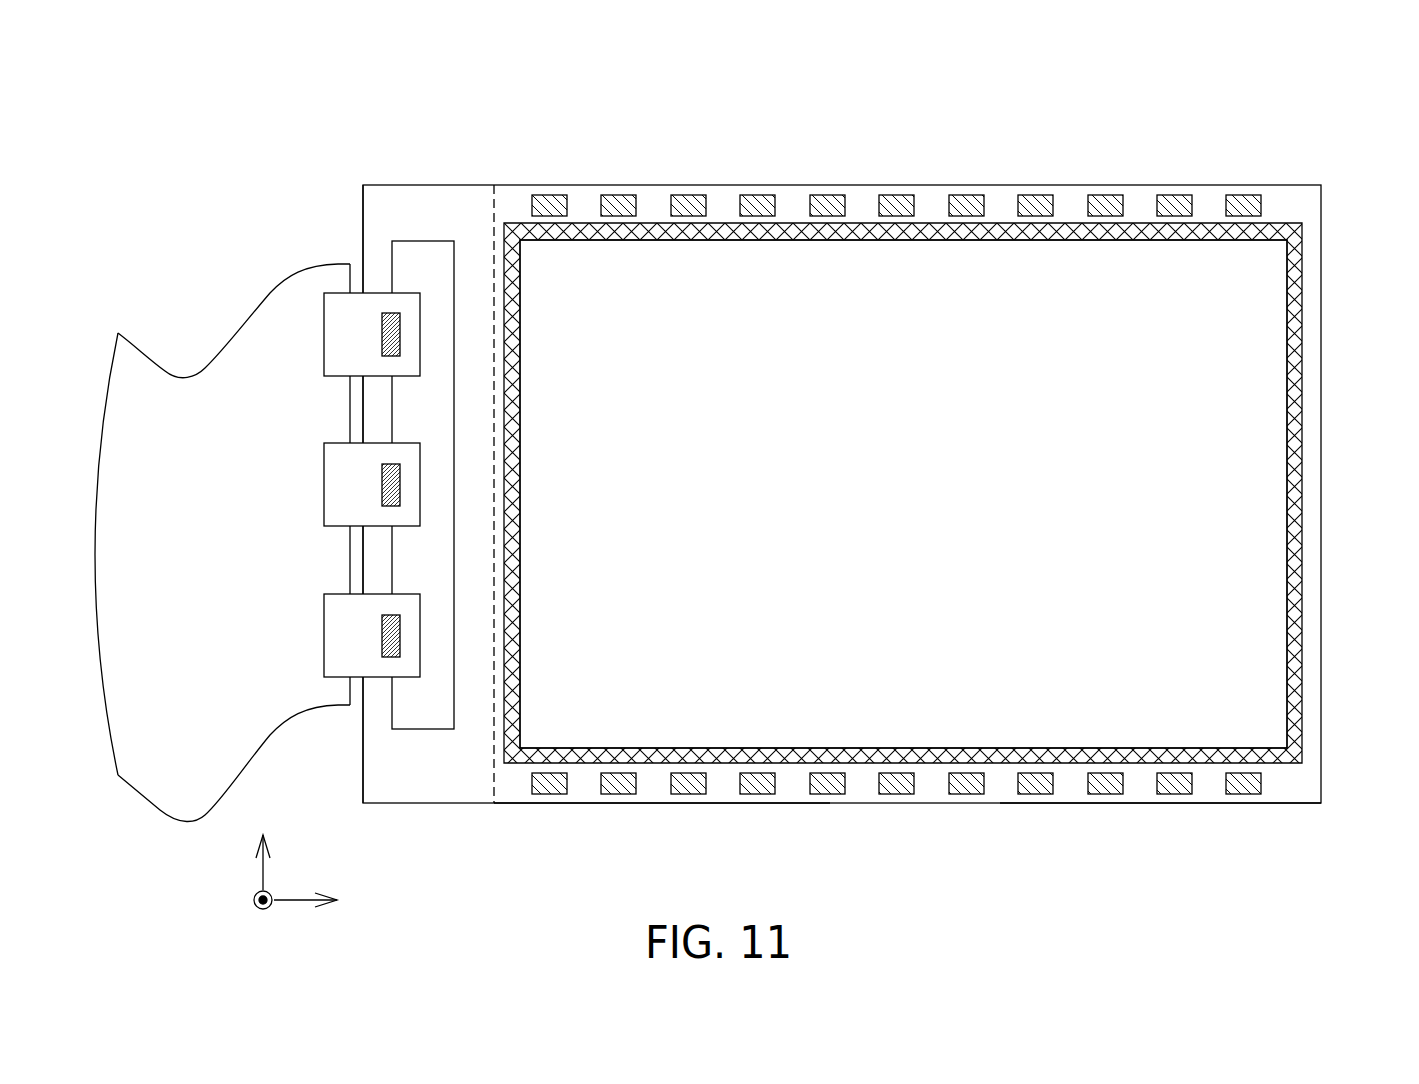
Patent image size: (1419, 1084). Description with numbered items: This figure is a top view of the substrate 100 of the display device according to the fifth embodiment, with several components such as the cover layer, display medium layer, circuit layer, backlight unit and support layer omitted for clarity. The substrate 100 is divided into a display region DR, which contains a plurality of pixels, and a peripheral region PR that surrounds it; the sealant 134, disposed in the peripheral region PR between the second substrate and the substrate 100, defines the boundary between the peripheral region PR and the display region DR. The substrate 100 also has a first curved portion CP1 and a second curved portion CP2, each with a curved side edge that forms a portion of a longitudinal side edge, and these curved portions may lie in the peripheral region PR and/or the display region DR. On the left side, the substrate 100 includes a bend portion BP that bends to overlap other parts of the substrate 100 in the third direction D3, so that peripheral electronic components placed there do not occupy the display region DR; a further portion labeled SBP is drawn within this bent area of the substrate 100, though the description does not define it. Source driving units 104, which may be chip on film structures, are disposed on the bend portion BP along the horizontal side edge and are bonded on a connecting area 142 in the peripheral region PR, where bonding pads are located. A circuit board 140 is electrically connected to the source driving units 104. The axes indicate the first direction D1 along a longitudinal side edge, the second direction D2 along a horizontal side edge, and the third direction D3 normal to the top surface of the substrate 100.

The substrate 100 is at (1278, 126).
The sealant 134 is at (1297, 310).
The circuit board 140 is at (190, 358).
The connecting area 142 is at (385, 704).
The source driving unit 104 is at (388, 485).
The bend portion BP is at (395, 197).
The sub bending portion SBP is at (363, 207).
The peripheral region PR is at (896, 436).
The display region DR is at (640, 268).
The first curved portion CP1 is at (802, 197).
The second curved portion CP2 is at (1205, 197).
The first direction D1 is at (324, 901).
The second direction D2 is at (263, 842).
The third direction D3 is at (242, 901).